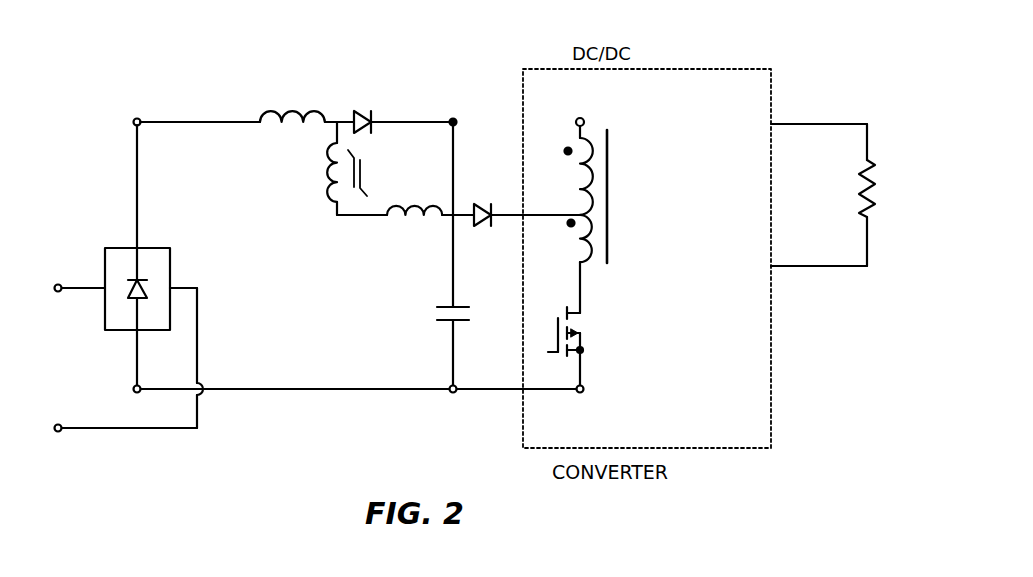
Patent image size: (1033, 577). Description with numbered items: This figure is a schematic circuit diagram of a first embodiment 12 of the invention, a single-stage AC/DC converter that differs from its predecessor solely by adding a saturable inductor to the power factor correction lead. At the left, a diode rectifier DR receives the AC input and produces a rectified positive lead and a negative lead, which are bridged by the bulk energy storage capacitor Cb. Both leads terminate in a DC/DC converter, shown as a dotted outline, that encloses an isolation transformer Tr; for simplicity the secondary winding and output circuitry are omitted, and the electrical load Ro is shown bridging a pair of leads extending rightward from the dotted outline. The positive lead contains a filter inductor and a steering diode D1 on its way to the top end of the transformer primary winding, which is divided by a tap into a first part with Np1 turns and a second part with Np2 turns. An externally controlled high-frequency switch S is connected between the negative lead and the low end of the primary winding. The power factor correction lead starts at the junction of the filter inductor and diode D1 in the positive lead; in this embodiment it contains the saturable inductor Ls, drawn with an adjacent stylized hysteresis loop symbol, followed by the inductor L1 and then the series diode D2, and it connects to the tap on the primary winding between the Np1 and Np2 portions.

The first embodiment 12 is at (127, 118).
The inductor L1 is at (307, 103).
The steering diode D1 is at (377, 90).
The saturable inductor Ls is at (335, 168).
The series diode D2 is at (523, 200).
The bulk capacitor Cb is at (443, 322).
The isolation transformer Tr is at (570, 178).
The first part of primary winding Np1 is at (560, 176).
The second part of primary winding Np2 is at (559, 238).
The high-frequency switch S is at (574, 327).
The diode rectifier DR is at (115, 327).
The electrical load Ro is at (833, 195).